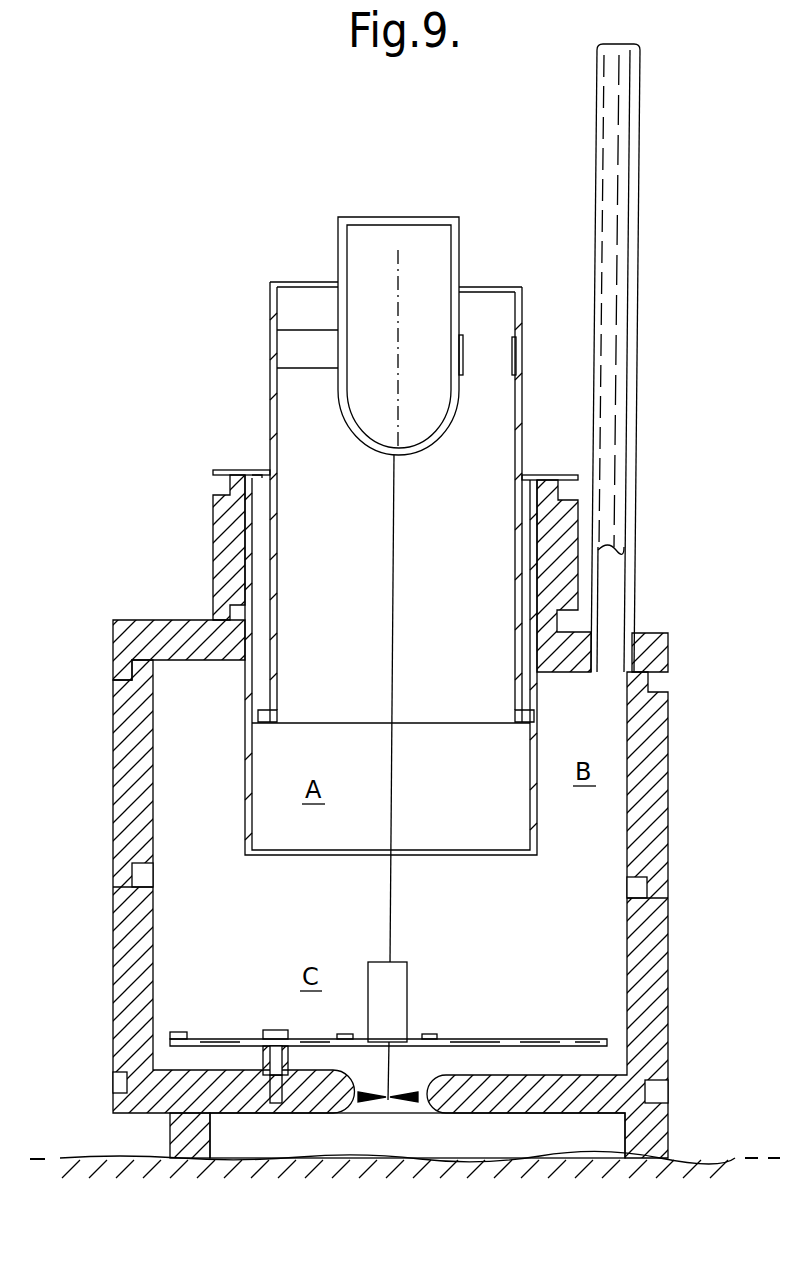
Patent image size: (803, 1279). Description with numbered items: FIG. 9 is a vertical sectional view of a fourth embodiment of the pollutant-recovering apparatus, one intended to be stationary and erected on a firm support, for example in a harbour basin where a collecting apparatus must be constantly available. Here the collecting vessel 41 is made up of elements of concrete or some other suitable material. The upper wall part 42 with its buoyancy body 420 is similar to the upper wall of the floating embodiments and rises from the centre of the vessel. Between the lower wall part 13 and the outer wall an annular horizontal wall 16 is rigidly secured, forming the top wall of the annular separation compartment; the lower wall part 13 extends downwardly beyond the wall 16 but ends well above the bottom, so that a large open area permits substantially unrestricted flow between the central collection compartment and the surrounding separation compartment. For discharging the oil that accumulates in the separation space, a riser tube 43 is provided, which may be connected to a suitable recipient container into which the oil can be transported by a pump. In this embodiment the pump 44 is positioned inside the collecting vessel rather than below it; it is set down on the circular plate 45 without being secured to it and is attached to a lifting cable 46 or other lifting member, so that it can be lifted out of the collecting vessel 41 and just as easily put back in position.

The collecting vessel 41 is at (100, 852).
The annular horizontal wall 16 is at (176, 633).
The lower wall part 13 is at (243, 812).
The upper wall part 42 is at (272, 370).
The buoyancy body 420 is at (432, 228).
The riser tube 43 is at (620, 322).
The pump 44 is at (424, 996).
The circular plate 45 is at (196, 1036).
The lifting cable 46 is at (392, 795).